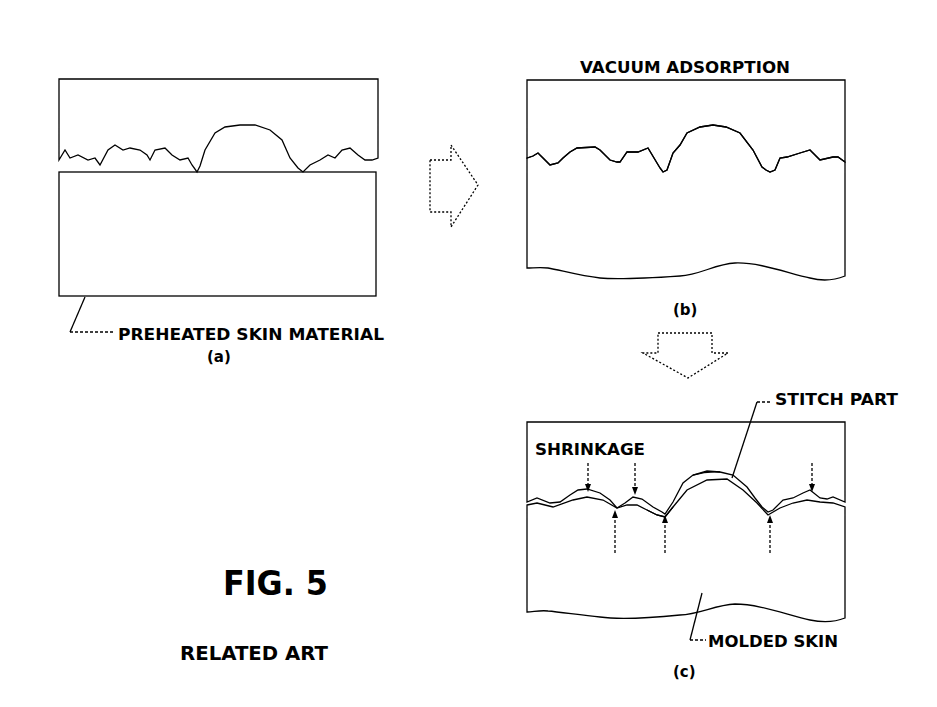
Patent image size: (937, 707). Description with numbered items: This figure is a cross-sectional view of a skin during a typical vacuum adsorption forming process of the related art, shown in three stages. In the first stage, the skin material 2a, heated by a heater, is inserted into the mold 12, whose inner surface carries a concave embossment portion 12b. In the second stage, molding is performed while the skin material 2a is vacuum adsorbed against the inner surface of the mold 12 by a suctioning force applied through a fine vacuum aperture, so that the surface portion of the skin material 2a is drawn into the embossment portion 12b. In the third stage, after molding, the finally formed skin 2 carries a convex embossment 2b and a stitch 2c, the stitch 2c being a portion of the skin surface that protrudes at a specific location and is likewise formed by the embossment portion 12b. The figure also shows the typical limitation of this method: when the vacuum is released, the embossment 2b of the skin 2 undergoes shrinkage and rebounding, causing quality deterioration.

The mold 12 is at (147, 93).
The embossment portion 12b is at (181, 158).
The skin material 2a is at (363, 265).
The skin 2 is at (540, 562).
The embossment 2b is at (656, 505).
The stitch 2c is at (710, 470).